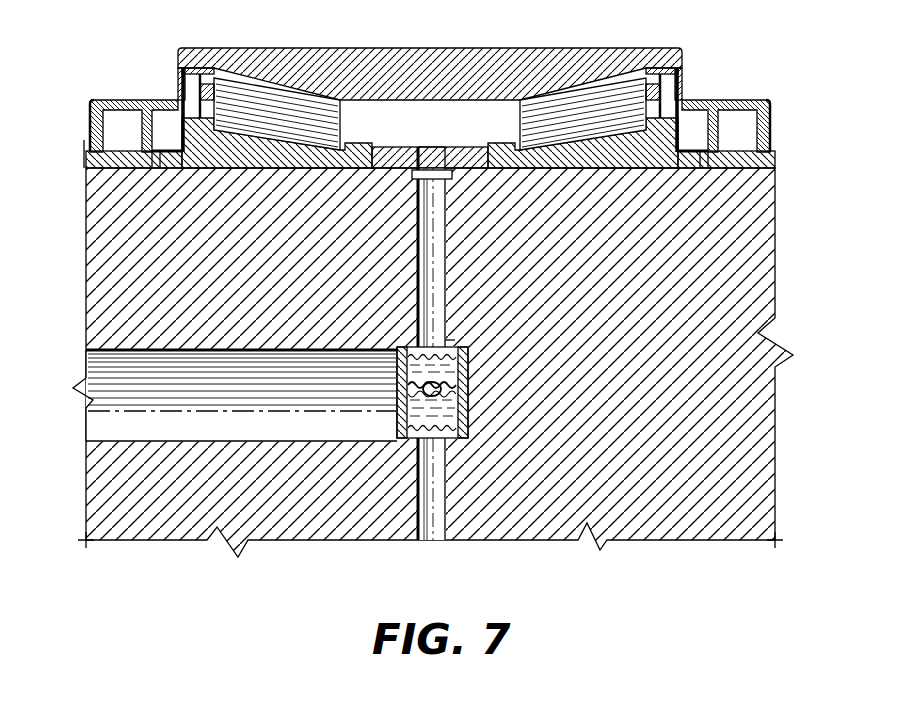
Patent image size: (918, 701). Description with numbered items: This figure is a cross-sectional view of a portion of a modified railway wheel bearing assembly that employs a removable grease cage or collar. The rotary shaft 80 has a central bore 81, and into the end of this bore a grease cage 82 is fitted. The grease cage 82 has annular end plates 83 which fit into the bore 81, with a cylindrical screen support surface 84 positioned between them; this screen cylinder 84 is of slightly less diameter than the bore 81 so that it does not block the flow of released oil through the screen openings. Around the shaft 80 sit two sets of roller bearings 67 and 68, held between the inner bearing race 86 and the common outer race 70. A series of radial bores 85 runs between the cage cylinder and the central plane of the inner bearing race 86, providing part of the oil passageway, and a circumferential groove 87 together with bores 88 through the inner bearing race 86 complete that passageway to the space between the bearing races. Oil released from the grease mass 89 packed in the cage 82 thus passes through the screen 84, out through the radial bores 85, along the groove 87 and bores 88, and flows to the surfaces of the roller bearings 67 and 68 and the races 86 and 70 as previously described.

The roller bearings 67 is at (572, 82).
The roller bearings 68 is at (276, 87).
The common outer race 70 is at (421, 50).
The rotary shaft 80 is at (777, 252).
The central bore 81 is at (117, 388).
The grease cage 82 is at (470, 405).
The annular end plates 83 is at (468, 360).
The cylindrical screen support surface 84 is at (453, 334).
The radial bores 85 is at (446, 258).
The inner bearing race 86 is at (257, 172).
The circumferential groove 87 is at (452, 179).
The bores 88 is at (431, 149).
The grease mass 89 is at (468, 388).